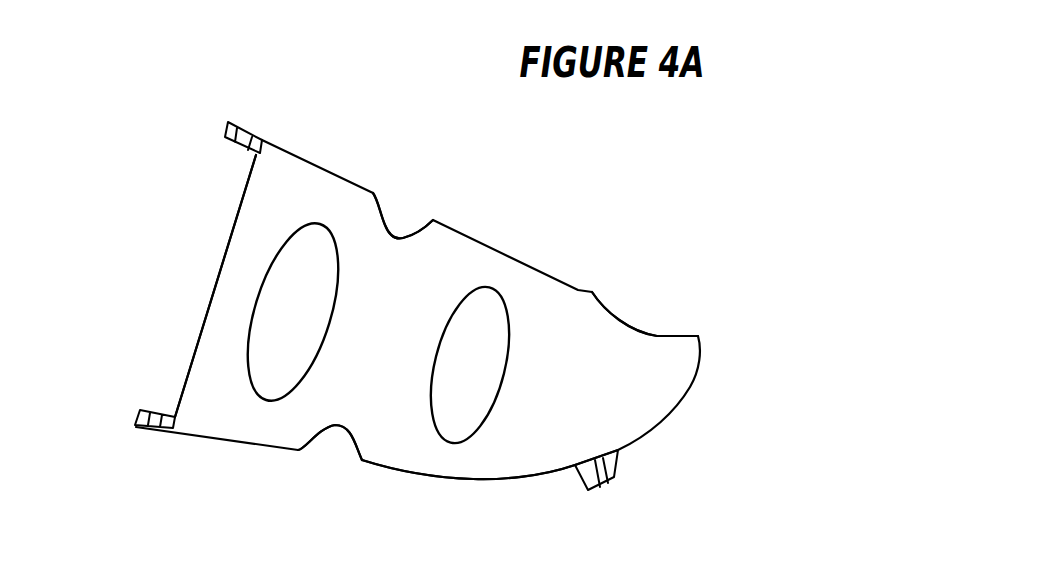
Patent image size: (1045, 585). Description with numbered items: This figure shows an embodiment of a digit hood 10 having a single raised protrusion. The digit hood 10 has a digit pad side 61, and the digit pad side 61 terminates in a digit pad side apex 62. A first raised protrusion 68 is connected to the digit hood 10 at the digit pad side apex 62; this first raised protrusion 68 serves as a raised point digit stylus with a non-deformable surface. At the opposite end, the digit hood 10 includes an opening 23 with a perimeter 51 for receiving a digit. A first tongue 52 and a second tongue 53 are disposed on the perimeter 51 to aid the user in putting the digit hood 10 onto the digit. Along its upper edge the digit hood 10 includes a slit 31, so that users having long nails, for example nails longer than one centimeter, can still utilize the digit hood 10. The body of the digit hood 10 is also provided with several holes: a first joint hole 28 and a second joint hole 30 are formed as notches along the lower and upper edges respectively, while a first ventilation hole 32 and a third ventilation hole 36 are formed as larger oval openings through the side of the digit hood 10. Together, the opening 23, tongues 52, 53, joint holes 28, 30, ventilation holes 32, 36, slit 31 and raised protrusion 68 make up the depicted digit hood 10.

The digit hood 10 is at (465, 304).
The opening 23 is at (398, 304).
The first joint hole 28 is at (327, 458).
The second joint hole 30 is at (405, 209).
The slit 31 is at (648, 316).
The first ventilation hole 32 is at (500, 282).
The third ventilation hole 36 is at (258, 392).
The perimeter 51 is at (203, 323).
The first tongue 52 is at (147, 430).
The second tongue 53 is at (244, 126).
The digit pad side 61 is at (450, 480).
The digit pad side apex 62 is at (605, 498).
The first raised protrusion 68 is at (583, 481).